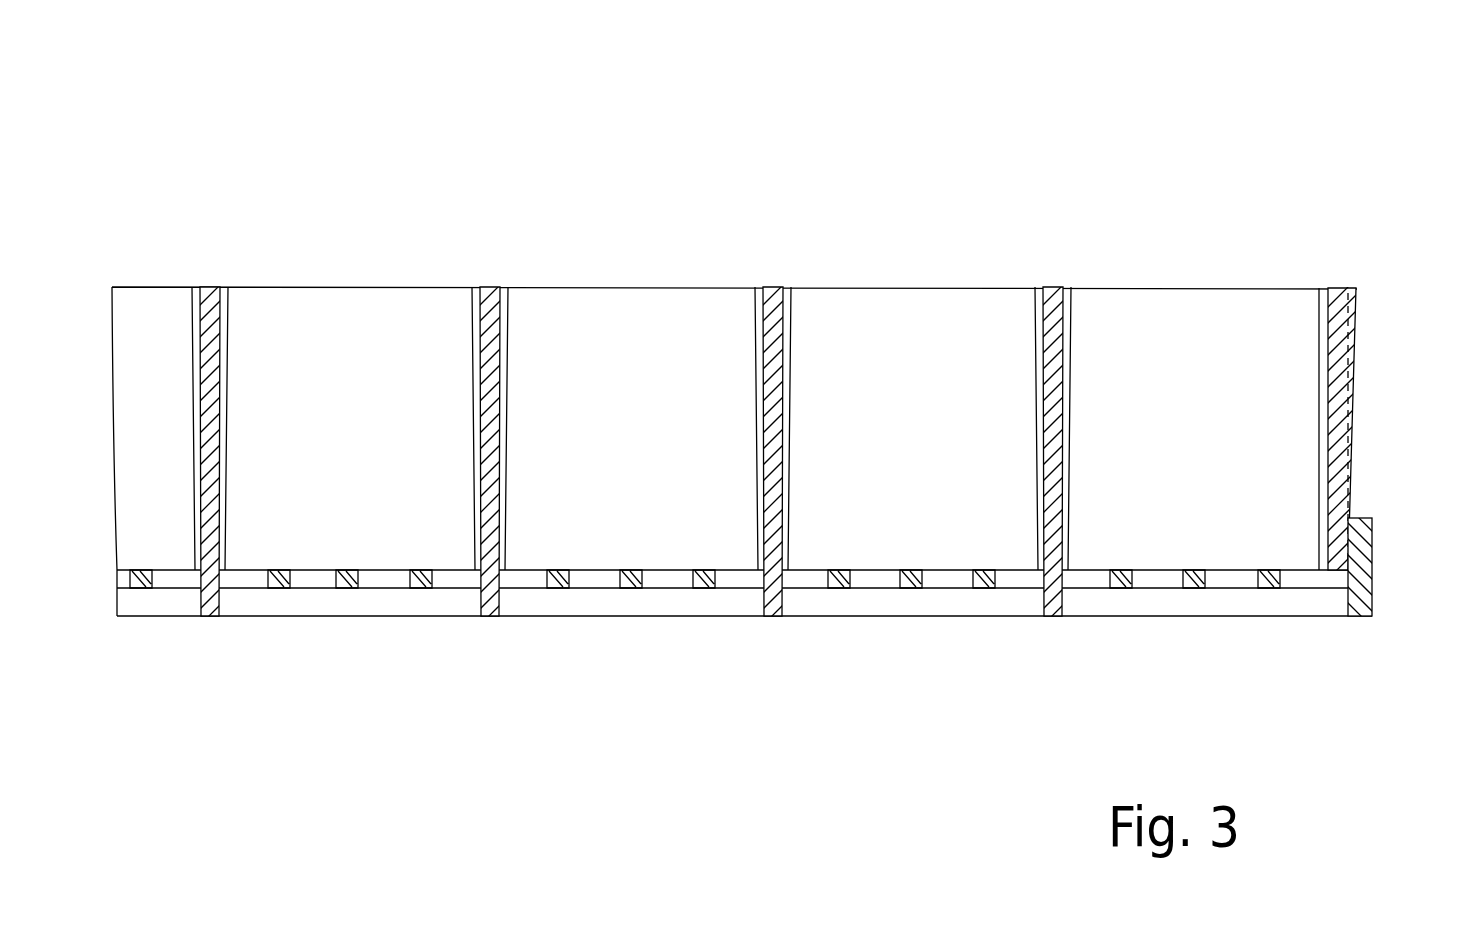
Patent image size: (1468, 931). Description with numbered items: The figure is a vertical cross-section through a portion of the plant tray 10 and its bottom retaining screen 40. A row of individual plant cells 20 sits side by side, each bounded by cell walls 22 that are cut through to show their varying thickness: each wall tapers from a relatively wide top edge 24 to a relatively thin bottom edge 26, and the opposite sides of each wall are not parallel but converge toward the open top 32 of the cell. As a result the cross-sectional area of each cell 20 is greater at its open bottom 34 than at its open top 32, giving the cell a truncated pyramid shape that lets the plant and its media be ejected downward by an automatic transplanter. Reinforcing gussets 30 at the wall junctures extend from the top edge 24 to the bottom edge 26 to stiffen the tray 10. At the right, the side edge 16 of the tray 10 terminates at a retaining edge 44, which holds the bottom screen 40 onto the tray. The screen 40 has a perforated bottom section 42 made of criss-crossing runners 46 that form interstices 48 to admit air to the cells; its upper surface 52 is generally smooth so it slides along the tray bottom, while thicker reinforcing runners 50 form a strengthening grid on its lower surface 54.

The plant tray 10 is at (872, 136).
The side edge 16 is at (1368, 348).
The plant cell 20 is at (950, 328).
The cell wall 22 is at (222, 318).
The top edge 24 is at (213, 287).
The bottom edge 26 is at (202, 580).
The reinforcing gusset 30 is at (222, 401).
The open top 32 is at (395, 296).
The open bottom 34 is at (406, 548).
The bottom retaining screen 40 is at (1159, 640).
The perforated bottom section 42 is at (1318, 630).
The retaining edge 44 is at (1374, 560).
The runner 46 is at (675, 584).
The interstice 48 is at (958, 588).
The reinforcing runner 50 is at (213, 603).
The upper surface 52 is at (538, 556).
The lower surface 54 is at (544, 632).